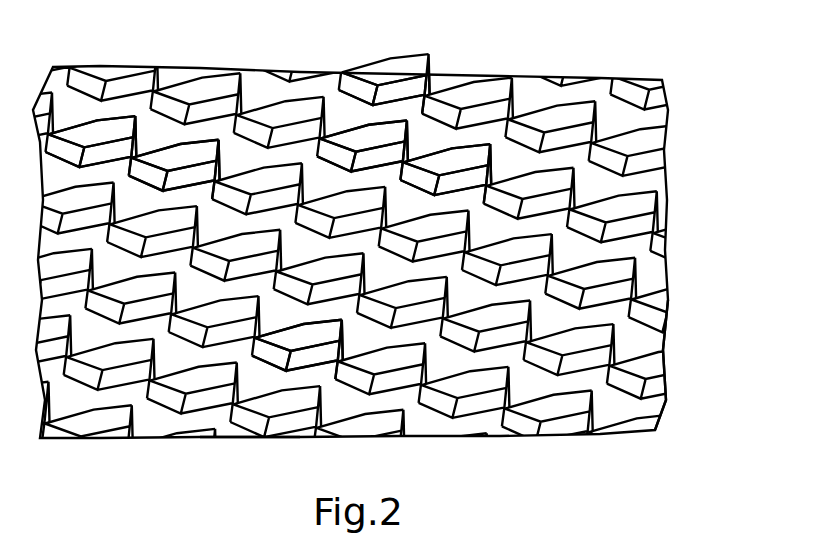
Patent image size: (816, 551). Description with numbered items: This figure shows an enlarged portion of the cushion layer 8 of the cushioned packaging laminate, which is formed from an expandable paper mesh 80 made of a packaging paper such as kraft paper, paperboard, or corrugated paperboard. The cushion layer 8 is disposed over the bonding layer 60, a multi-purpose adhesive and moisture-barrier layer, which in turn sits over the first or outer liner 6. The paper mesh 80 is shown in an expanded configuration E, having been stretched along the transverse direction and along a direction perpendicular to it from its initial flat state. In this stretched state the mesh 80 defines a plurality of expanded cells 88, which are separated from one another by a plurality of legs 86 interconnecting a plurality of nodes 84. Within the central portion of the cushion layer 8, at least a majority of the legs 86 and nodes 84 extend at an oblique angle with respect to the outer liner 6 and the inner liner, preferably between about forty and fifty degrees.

The cushion layer 8 is at (391, 252).
The expandable paper mesh 80 is at (728, 119).
The bonding layer 60 is at (640, 392).
The expanded cells 88 is at (101, 132).
The legs 86 is at (430, 142).
The nodes 84 is at (497, 163).
The outer liner 6 is at (325, 383).
The expanded configuration E is at (242, 451).